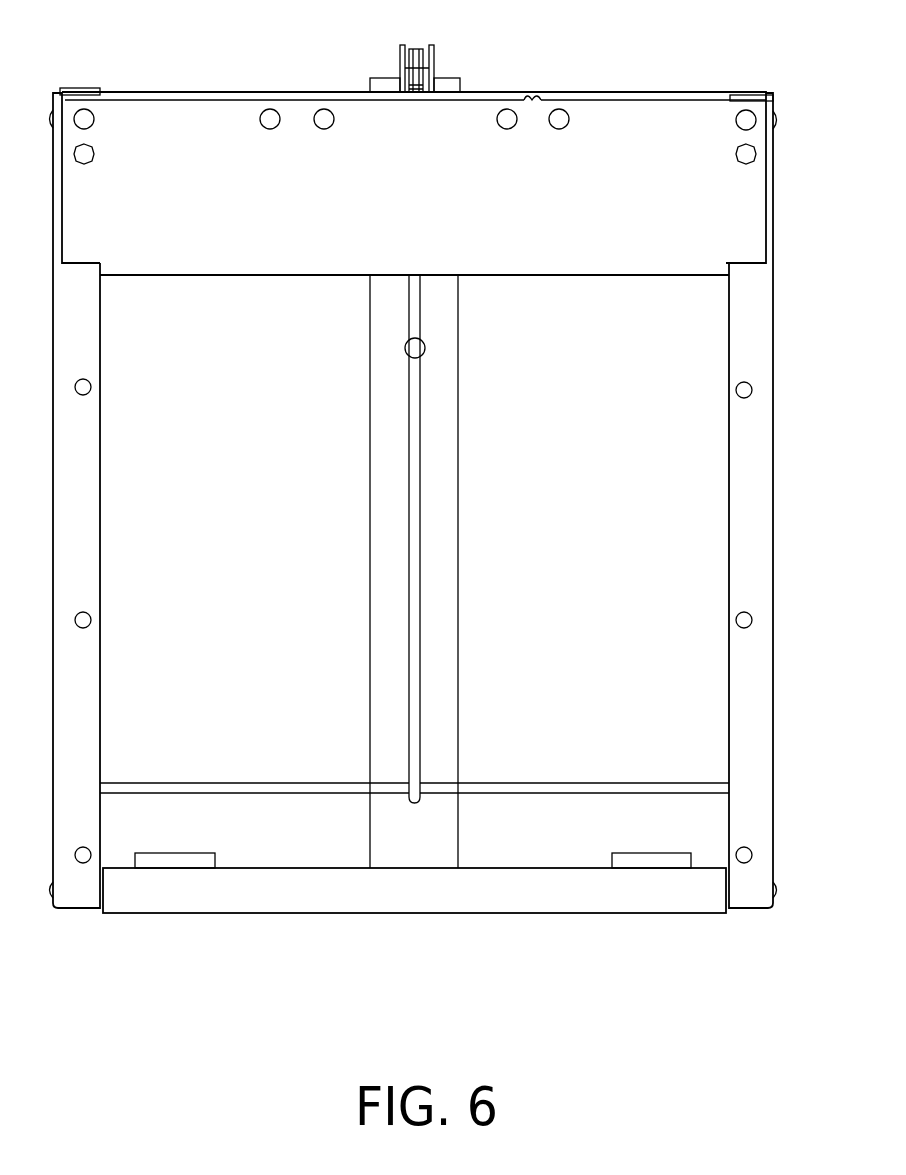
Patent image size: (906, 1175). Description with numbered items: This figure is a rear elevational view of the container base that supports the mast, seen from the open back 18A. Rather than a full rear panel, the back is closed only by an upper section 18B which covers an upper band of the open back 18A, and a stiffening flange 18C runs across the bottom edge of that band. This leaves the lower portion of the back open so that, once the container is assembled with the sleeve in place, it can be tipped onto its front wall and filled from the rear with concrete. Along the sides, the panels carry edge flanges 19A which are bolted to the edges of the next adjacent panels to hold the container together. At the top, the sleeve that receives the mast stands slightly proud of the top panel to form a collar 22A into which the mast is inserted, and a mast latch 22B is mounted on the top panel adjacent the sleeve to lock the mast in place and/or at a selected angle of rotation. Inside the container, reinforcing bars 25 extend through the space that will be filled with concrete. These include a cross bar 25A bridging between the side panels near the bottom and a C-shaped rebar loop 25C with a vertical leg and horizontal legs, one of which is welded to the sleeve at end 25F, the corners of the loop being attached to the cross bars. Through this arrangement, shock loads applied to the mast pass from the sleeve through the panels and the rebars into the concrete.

The open back 18A is at (257, 555).
The upper section 18B is at (237, 258).
The stiffening flange 18C is at (172, 275).
The edge flange 19A is at (78, 490).
The collar 22A is at (376, 80).
The mast latch 22B is at (445, 52).
The reinforcing bars 25 is at (572, 778).
The cross bar 25A is at (230, 787).
The rebar loop 25C is at (413, 543).
The end of rebar loop 25F is at (420, 800).